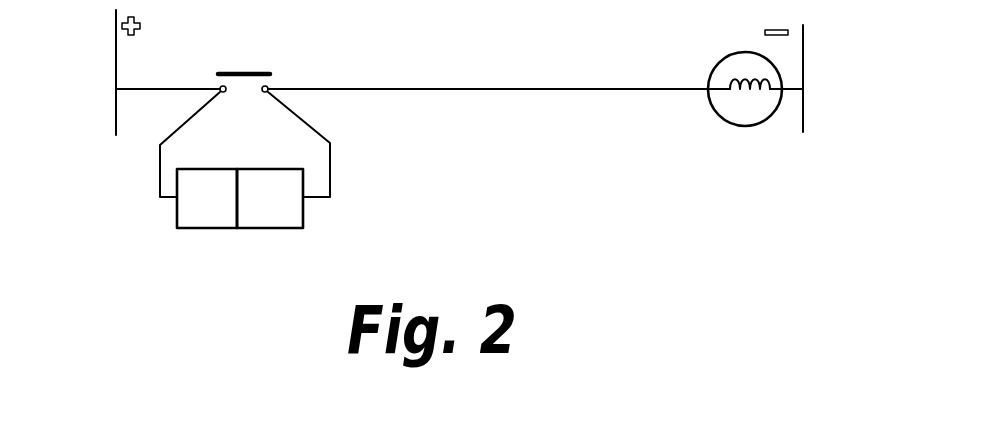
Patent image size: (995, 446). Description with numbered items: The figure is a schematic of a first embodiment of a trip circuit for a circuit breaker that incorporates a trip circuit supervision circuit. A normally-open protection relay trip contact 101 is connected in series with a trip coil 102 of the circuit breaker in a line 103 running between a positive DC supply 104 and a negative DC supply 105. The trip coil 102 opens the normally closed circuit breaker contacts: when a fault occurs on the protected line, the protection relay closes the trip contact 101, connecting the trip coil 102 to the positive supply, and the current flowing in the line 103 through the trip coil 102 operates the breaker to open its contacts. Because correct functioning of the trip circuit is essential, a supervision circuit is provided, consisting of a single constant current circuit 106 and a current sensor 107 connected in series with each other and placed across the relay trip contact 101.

The protection relay trip contact 101 is at (255, 73).
The trip coil 102 is at (727, 53).
The line 103 is at (577, 89).
The positive DC supply 104 is at (116, 58).
The negative DC supply 105 is at (803, 75).
The constant current circuit 106 is at (177, 222).
The current sensor 107 is at (302, 225).